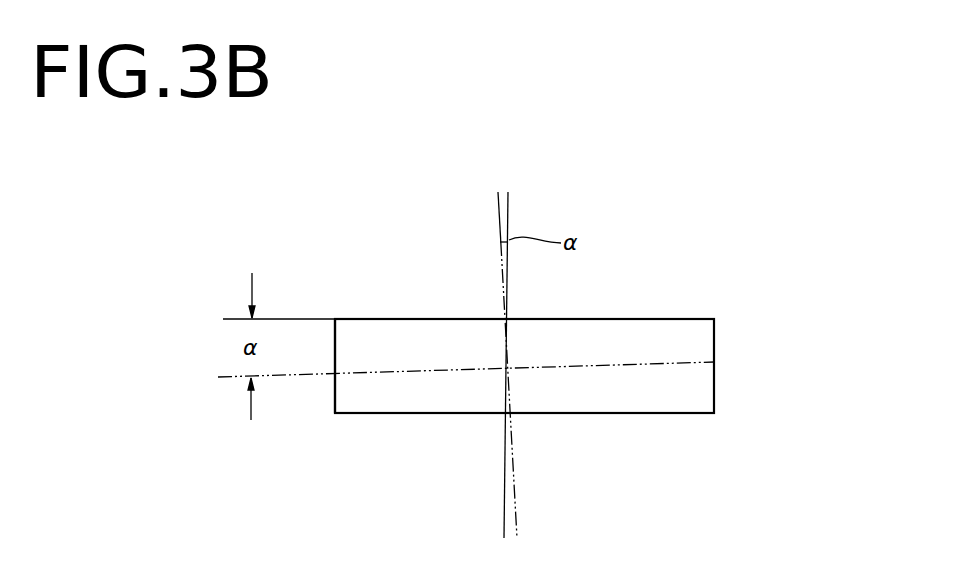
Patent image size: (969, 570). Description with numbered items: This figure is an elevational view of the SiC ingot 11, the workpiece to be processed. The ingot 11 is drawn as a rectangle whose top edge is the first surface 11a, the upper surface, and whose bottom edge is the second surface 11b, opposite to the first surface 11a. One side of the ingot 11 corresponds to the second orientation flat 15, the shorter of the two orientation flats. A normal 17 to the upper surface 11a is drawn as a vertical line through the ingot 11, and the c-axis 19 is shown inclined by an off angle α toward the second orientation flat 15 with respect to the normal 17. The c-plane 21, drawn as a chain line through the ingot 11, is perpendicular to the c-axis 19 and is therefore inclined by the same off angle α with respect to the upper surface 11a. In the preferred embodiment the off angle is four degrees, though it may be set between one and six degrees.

The SiC ingot 11 is at (722, 323).
The first surface 11a is at (362, 319).
The second surface 11b is at (565, 413).
The second orientation flat 15 is at (335, 400).
The normal 17 is at (509, 203).
The c-axis 19 is at (497, 210).
The c-plane 21 is at (617, 362).